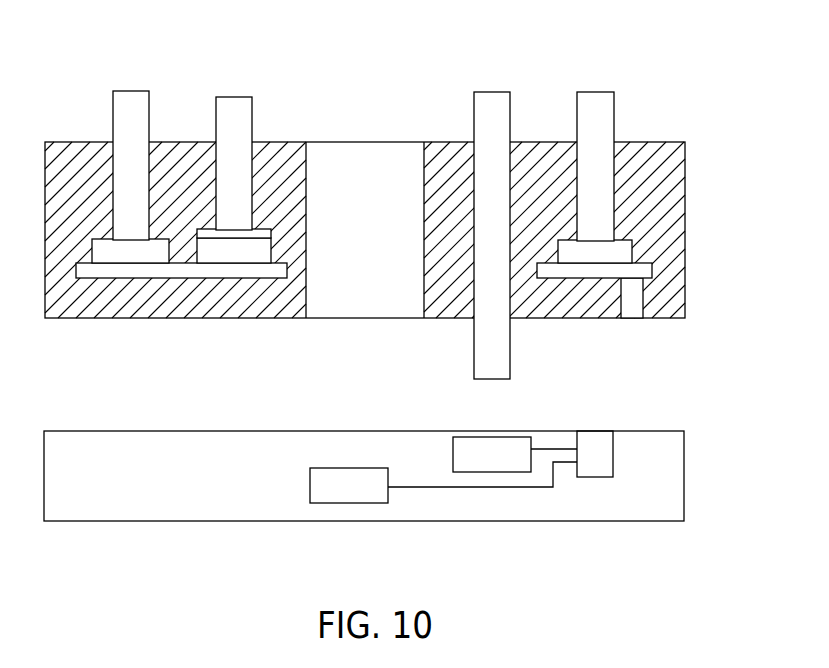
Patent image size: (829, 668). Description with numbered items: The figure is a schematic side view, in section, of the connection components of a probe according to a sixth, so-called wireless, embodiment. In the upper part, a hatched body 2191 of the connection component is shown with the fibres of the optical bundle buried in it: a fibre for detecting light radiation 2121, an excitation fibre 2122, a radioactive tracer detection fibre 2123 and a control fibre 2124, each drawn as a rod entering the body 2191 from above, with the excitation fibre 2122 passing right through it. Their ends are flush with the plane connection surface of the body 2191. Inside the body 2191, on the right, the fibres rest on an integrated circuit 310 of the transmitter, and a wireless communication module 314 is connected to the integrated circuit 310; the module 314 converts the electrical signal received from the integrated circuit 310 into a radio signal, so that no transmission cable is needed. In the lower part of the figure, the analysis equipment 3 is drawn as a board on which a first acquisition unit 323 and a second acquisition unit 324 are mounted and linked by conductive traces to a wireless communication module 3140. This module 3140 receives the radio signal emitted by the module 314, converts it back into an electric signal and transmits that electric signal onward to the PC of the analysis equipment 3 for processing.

The analysis equipment 3 is at (684, 475).
The integrated circuit 310 is at (637, 273).
The wireless communication module 314 is at (630, 307).
The first acquisition unit 323 is at (465, 437).
The second acquisition unit 324 is at (336, 504).
The wireless communication module 3140 is at (596, 478).
The fibres for detecting light radiation 2121 is at (235, 115).
The excitation fibre 2122 is at (492, 115).
The radioactive tracer detection fibres 2123 is at (131, 113).
The control fibres 2124 is at (596, 115).
The body 2191 is at (446, 165).